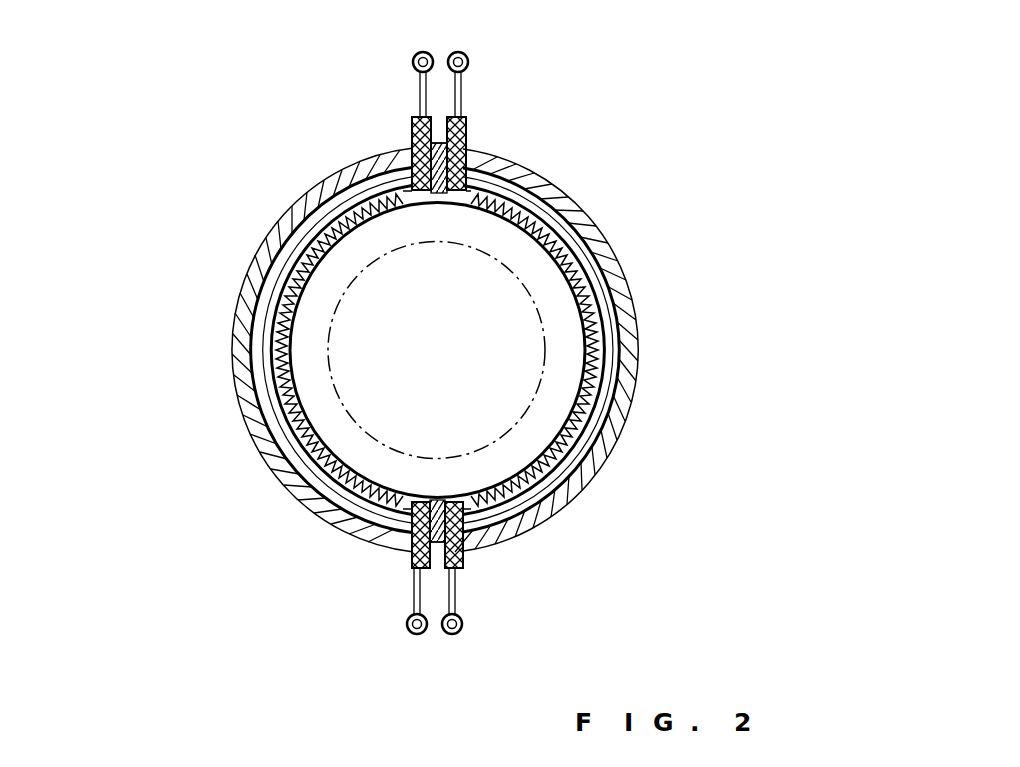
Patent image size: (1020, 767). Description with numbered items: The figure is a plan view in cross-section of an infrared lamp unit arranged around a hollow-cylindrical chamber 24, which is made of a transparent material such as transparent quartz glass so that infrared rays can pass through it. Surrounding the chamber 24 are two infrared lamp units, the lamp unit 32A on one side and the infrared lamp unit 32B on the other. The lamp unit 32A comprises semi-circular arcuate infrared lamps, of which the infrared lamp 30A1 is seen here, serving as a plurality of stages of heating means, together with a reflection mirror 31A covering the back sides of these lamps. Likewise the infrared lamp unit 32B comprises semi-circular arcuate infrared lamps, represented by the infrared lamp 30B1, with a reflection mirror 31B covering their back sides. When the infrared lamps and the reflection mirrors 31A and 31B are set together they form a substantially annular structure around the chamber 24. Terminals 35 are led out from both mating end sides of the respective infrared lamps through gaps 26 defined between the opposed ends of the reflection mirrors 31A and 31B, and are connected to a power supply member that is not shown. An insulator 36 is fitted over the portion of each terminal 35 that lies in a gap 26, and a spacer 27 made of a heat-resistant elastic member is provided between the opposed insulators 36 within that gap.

The hollow-cylindrical chamber 24 is at (548, 331).
The gap 26 is at (441, 140).
The spacer 27 is at (468, 168).
The infrared lamp 30A1 is at (300, 455).
The infrared lamp 30B1 is at (607, 337).
The reflection mirror 31A is at (240, 331).
The reflection mirror 31B is at (623, 437).
The lamp unit 32A is at (240, 369).
The infrared lamp unit 32B is at (603, 470).
The terminal 35 is at (413, 62).
The insulator 36 is at (412, 125).